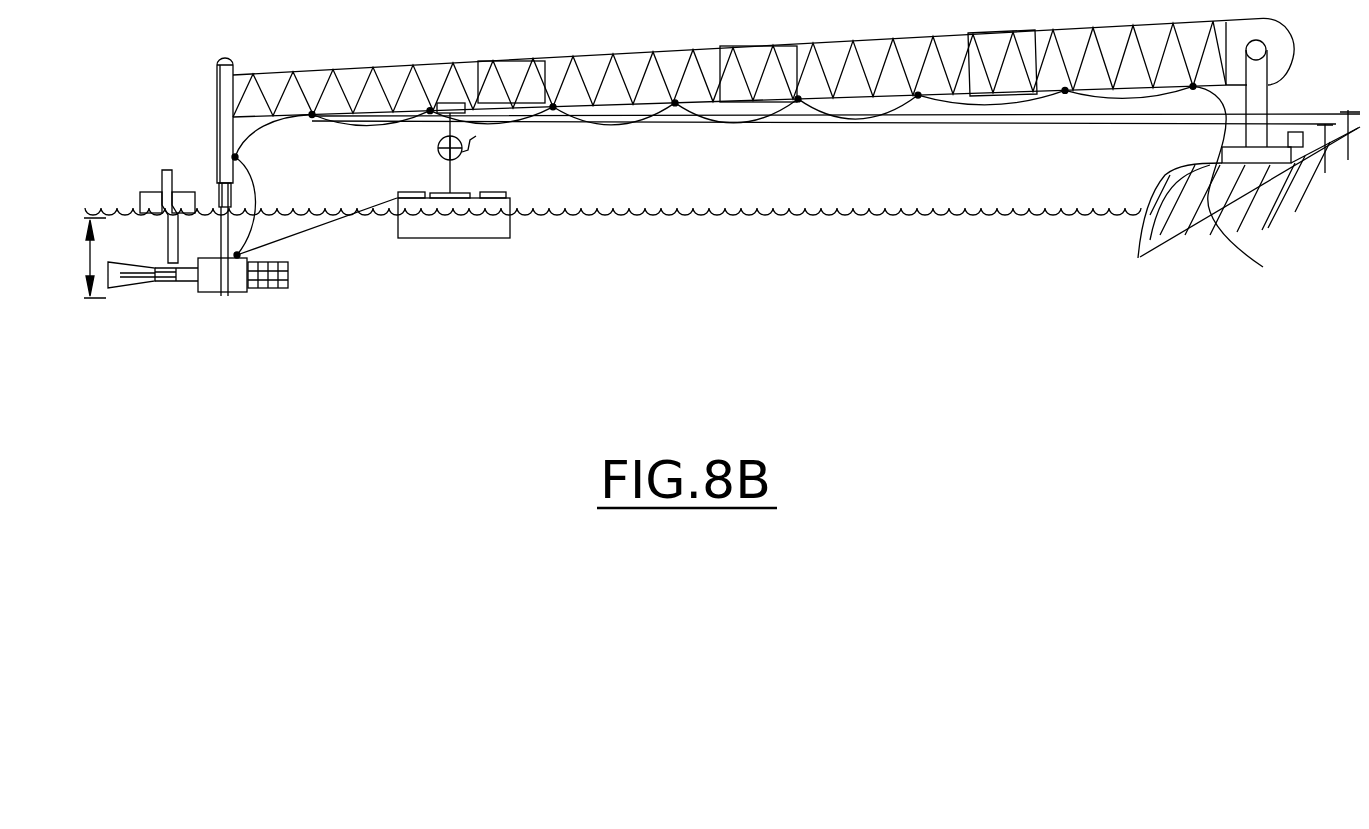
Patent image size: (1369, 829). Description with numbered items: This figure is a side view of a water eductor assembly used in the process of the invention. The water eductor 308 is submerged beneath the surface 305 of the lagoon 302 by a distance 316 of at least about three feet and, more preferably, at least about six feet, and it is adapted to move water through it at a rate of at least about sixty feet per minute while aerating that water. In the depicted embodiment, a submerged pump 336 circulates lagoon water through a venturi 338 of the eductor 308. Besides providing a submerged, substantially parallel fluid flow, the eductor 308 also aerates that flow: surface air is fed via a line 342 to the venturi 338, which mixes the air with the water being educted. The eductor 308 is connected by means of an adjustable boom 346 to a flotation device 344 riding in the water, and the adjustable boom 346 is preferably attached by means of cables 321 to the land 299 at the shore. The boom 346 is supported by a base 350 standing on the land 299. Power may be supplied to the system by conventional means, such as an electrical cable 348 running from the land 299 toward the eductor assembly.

The land 299 is at (1260, 219).
The lagoon 302 is at (722, 256).
The surface 305 is at (828, 210).
The water eductor 308 is at (186, 279).
The distance 316 is at (112, 260).
The cables 321 is at (300, 226).
The submerged pump 336 is at (236, 283).
The venturi 338 is at (126, 278).
The line 342 is at (170, 233).
The flotation device 344 is at (490, 230).
The adjustable boom 346 is at (734, 60).
The electrical cable 348 is at (1252, 254).
The base 350 is at (1258, 91).